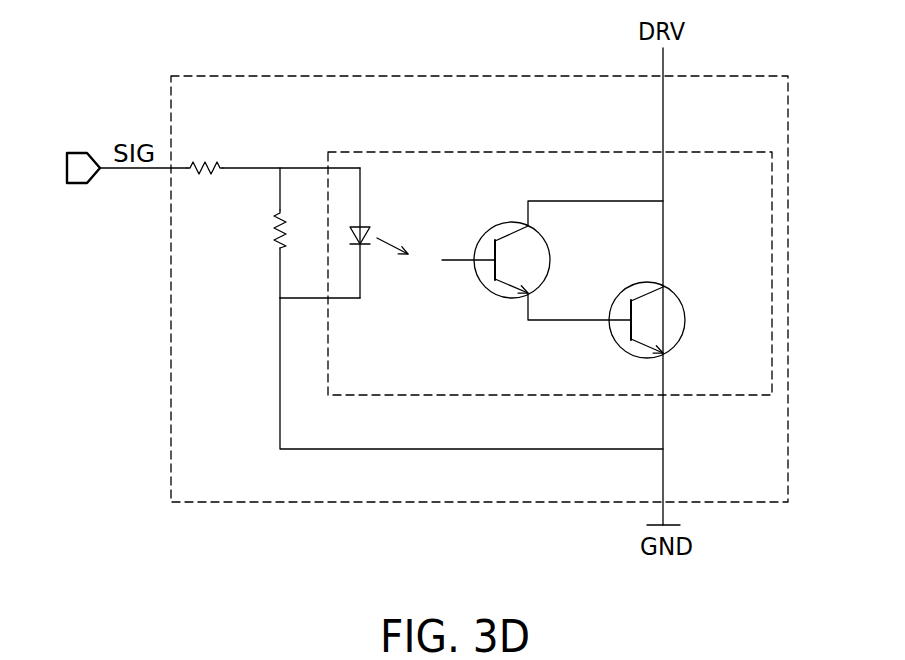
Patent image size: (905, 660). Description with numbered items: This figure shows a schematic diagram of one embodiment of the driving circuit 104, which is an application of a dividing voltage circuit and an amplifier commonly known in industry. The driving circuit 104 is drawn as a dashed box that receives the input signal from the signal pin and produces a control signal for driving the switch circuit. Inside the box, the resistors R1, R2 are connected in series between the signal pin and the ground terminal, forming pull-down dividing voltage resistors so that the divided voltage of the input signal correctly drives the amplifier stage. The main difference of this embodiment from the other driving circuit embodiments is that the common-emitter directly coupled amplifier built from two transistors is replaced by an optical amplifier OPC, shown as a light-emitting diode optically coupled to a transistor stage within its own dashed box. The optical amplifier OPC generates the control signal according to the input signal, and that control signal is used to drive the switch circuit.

The driving circuit 104 is at (755, 75).
The optical amplifier OPC is at (540, 152).
The resistor R1 is at (205, 155).
The resistor R2 is at (260, 233).